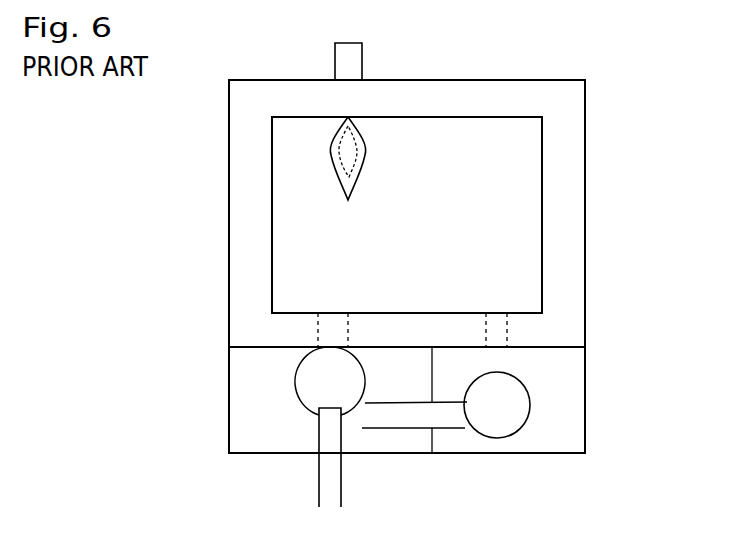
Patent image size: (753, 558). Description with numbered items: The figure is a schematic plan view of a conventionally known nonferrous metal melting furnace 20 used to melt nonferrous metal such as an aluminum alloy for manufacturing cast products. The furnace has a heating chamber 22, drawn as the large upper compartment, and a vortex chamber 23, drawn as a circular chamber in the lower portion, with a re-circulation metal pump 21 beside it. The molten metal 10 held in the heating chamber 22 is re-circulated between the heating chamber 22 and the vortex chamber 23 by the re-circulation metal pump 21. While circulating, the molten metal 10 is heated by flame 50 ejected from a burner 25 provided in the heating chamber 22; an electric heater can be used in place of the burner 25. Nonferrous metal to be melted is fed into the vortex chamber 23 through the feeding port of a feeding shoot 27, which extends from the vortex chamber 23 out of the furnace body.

The prior art gaming device 20 is at (612, 105).
The heating chamber 22 is at (473, 140).
The molten metal 10 is at (488, 249).
The burner 25 is at (335, 70).
The flame 50 is at (365, 156).
The vortex chamber 23 is at (303, 400).
The re-circulation metal pump 21 is at (495, 414).
The feeding shoot 27 is at (330, 455).